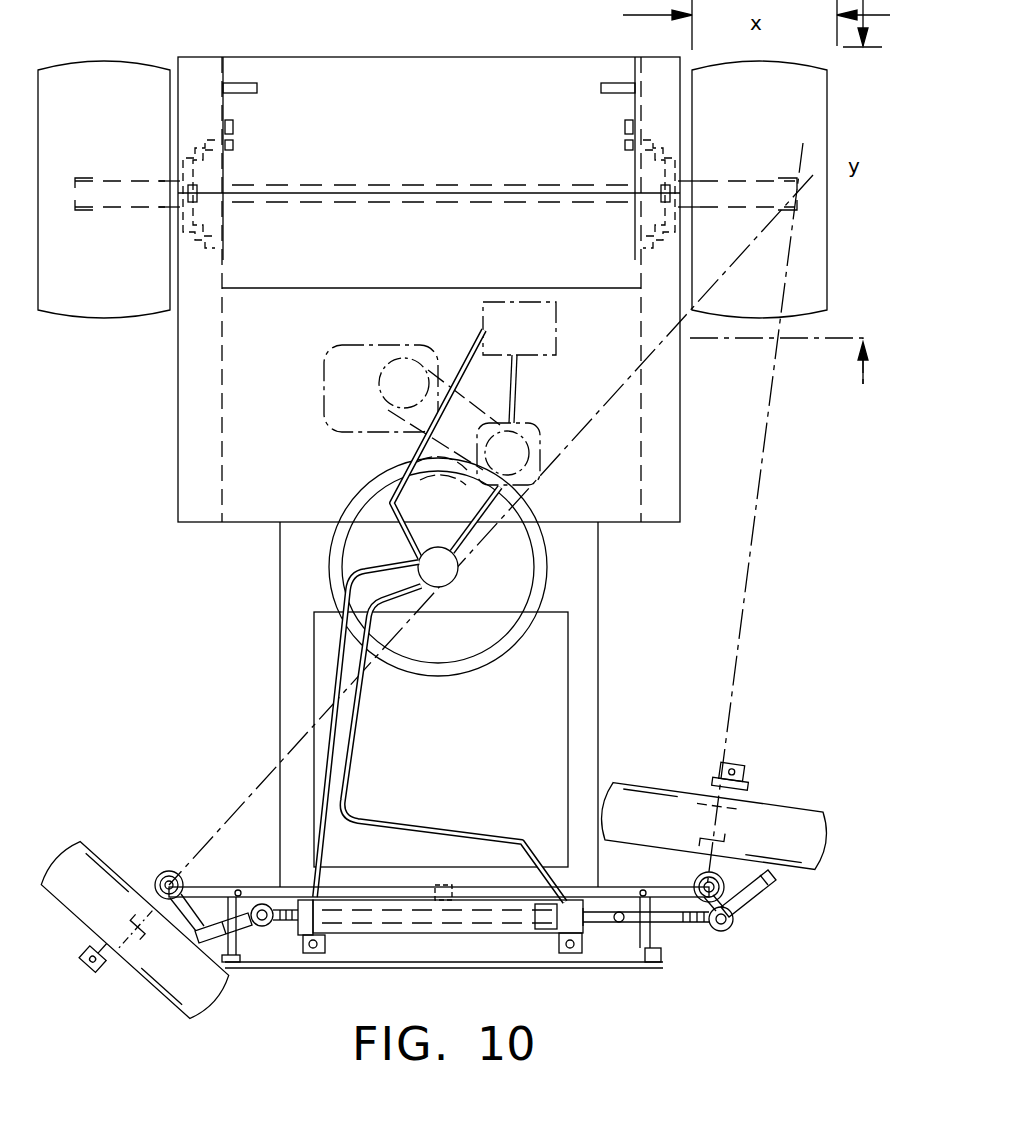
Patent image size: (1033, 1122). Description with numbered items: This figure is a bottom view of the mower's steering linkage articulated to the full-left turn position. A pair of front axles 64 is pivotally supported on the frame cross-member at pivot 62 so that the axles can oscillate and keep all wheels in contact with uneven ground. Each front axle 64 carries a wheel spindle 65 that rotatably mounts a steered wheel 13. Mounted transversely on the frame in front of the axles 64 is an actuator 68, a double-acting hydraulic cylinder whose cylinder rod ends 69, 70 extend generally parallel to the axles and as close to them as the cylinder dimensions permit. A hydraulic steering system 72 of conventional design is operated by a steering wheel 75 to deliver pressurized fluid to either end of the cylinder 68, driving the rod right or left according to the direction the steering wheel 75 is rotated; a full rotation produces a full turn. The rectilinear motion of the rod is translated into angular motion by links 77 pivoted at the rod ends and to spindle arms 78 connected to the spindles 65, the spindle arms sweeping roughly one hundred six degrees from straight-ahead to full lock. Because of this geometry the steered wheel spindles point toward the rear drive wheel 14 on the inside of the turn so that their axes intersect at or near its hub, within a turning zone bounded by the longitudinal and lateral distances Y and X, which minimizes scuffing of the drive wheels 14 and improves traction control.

The steered wheel 13 is at (195, 1007).
The drive wheel 14 is at (110, 150).
The pivot 62 is at (443, 887).
The front axle 64 is at (255, 893).
The wheel spindle 65 is at (160, 872).
The actuator 68 is at (340, 933).
The cylinder rod end 69 is at (290, 935).
The cylinder rod end 70 is at (665, 927).
The hydraulic steering system 72 is at (272, 492).
The steering wheel 75 is at (553, 576).
The link 77 is at (217, 913).
The spindle arm 78 is at (182, 925).